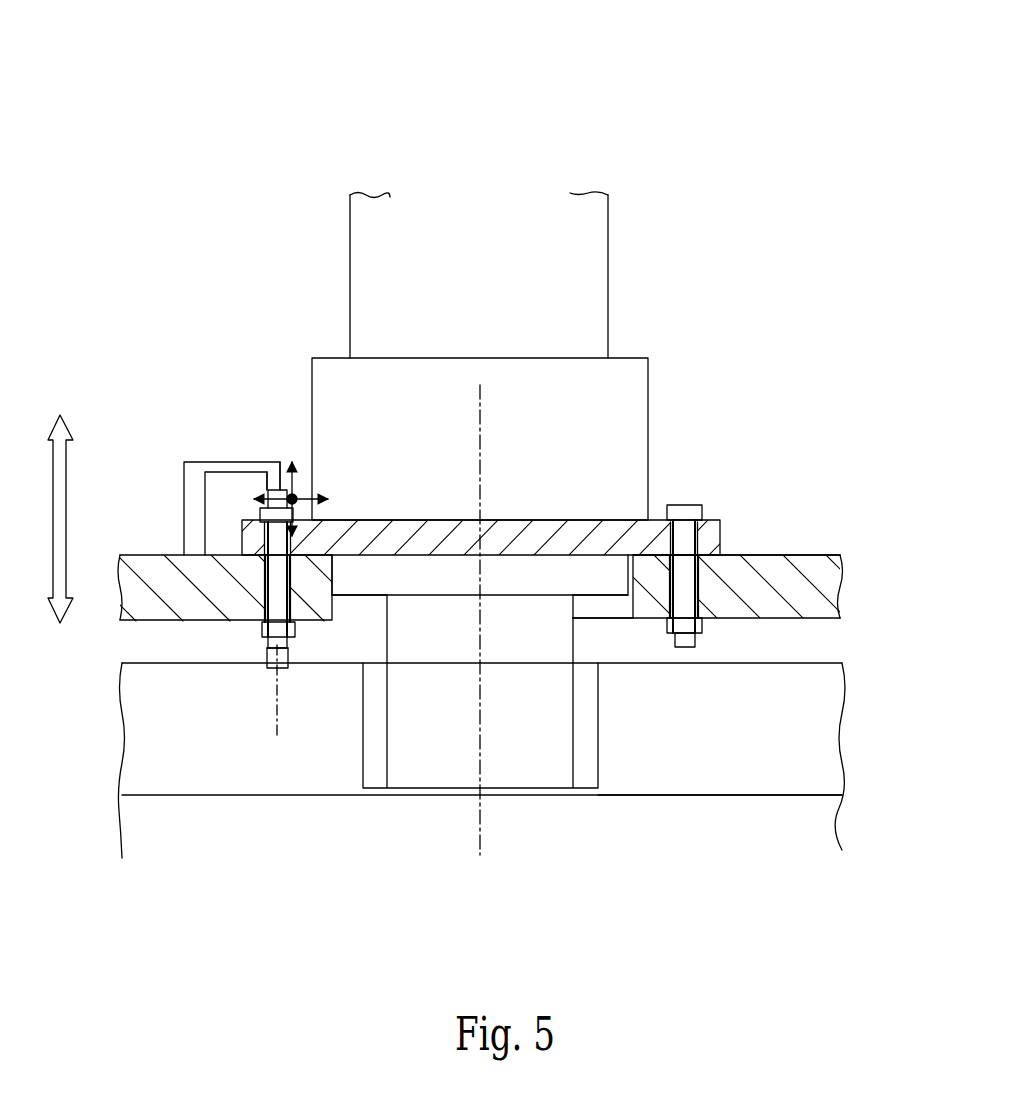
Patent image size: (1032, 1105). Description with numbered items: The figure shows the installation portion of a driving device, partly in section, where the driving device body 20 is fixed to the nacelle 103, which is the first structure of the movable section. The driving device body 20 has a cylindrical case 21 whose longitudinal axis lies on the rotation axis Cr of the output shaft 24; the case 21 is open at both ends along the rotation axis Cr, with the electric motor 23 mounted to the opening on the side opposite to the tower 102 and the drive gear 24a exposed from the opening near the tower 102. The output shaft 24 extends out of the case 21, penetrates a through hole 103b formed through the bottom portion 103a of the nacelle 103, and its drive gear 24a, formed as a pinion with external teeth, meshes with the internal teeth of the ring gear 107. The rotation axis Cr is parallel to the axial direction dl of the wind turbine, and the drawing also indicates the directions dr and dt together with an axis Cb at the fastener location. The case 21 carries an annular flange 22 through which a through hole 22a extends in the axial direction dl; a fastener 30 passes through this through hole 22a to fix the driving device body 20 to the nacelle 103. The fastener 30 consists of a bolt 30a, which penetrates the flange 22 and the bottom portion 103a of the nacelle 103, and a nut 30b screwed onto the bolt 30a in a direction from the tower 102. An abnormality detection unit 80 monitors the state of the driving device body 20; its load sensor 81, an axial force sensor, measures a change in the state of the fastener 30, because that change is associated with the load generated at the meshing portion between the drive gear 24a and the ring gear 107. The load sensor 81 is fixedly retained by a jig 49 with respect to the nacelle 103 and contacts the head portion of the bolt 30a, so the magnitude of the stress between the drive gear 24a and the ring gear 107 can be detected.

The driving device body 20 is at (595, 148).
The case 21 is at (640, 386).
The flange 22 is at (525, 520).
The through hole 22a is at (243, 553).
The electric motor 23 is at (594, 256).
The output shaft 24 is at (445, 650).
The drive gear 24a is at (528, 770).
The fastener 30 is at (251, 515).
The bolt 30a is at (273, 587).
The nut 30b is at (290, 648).
The jig 49 is at (196, 472).
The abnormality detection unit 80 is at (270, 486).
The load sensor 81 is at (262, 668).
The tower 102 is at (861, 830).
The nacelle 103 is at (852, 570).
The bottom portion 103a is at (803, 566).
The through hole 103b is at (618, 606).
The ring gear 107 is at (695, 775).
The bolt axis Cb is at (276, 700).
The rotation axis Cr is at (466, 826).
The axial direction dl is at (302, 470).
The radial direction dr is at (299, 500).
The tangential direction dt is at (300, 501).